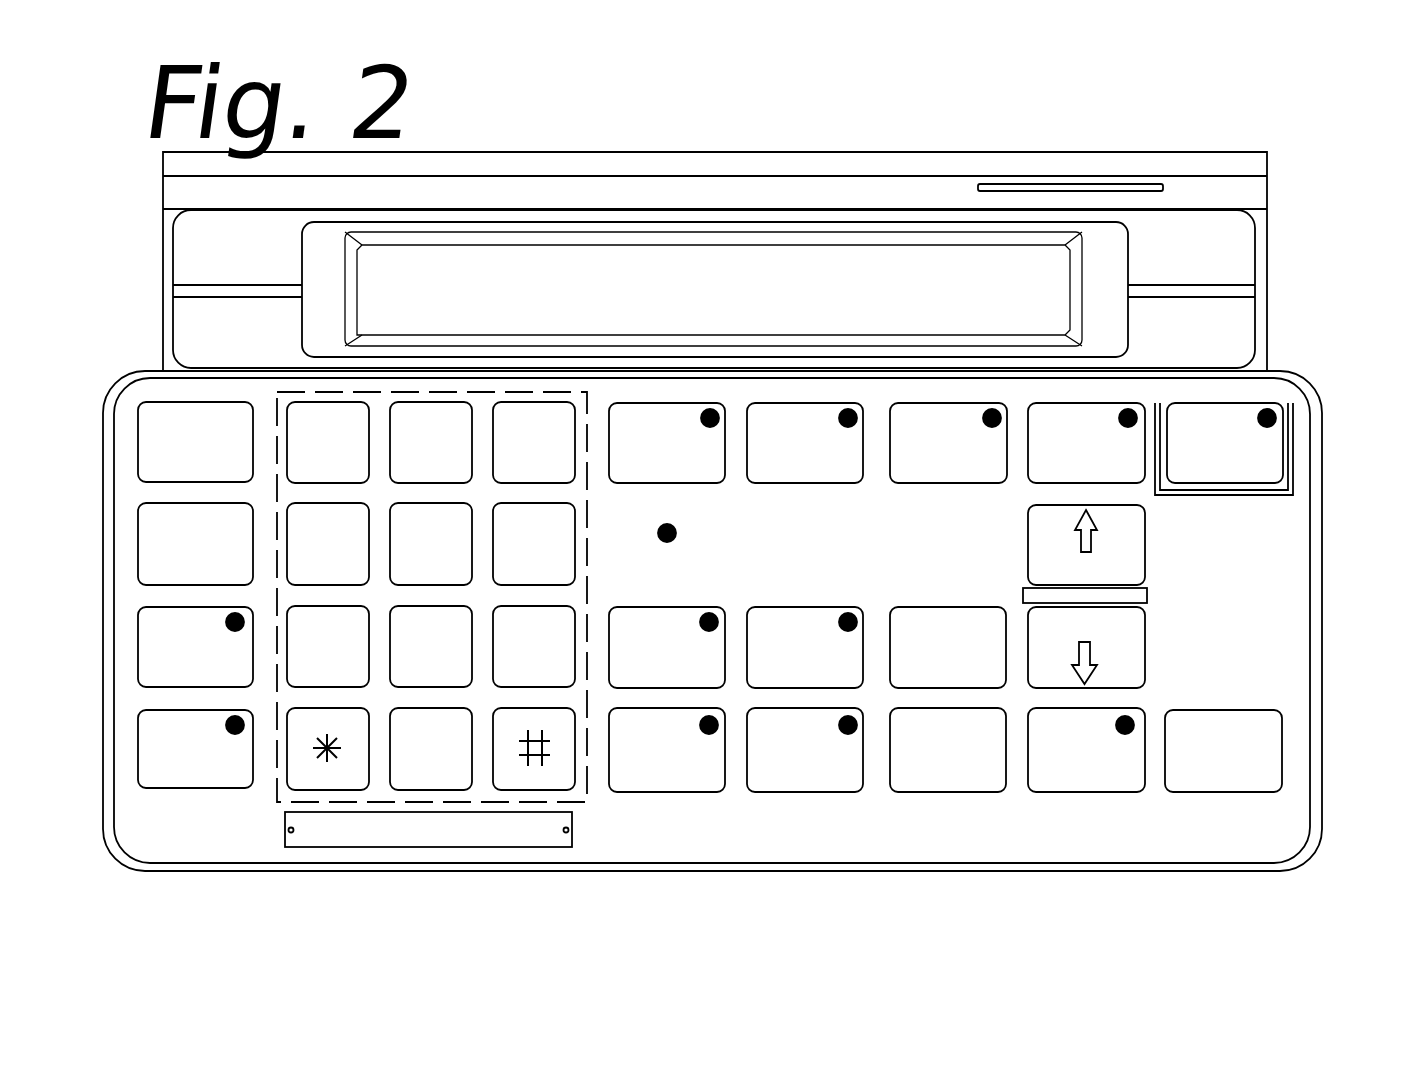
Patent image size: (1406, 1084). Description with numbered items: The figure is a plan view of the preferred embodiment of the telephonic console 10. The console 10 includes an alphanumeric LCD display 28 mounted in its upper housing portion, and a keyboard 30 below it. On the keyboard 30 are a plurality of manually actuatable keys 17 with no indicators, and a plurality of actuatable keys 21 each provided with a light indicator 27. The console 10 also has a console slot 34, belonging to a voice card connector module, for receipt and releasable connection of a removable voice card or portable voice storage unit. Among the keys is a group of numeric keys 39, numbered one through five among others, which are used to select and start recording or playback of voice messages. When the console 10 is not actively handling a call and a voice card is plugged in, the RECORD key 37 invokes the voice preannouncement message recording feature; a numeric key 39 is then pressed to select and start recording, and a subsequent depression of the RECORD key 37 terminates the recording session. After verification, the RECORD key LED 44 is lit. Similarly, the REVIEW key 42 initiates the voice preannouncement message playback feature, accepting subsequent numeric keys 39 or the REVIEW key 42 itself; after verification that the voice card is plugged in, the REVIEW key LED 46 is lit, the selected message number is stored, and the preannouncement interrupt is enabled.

The telephonic console 10 is at (1288, 282).
The manually actuatable keys 17 is at (153, 535).
The actuatable keys 21 is at (630, 413).
The light indicators 27 is at (712, 412).
The alphanumeric LCD display 28 is at (375, 258).
The keyboard 30 is at (1245, 650).
The console slot 34 is at (1113, 185).
The RECORD key 37 is at (650, 622).
The numeric key 39 is at (335, 410).
The REVIEW key 42 is at (818, 622).
The RECORD key LED 44 is at (712, 612).
The REVIEW key LED 46 is at (848, 612).